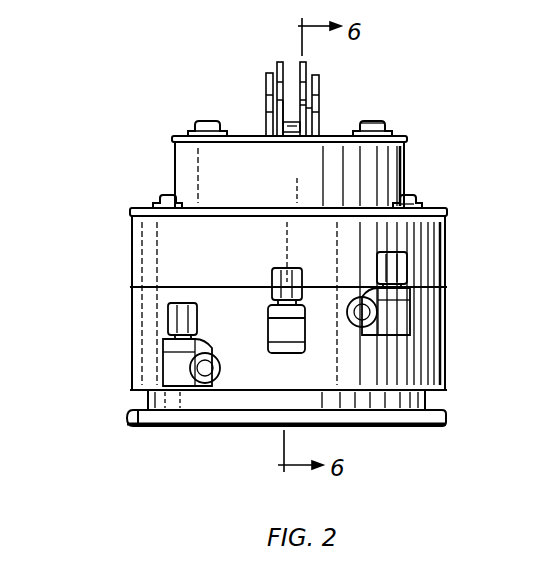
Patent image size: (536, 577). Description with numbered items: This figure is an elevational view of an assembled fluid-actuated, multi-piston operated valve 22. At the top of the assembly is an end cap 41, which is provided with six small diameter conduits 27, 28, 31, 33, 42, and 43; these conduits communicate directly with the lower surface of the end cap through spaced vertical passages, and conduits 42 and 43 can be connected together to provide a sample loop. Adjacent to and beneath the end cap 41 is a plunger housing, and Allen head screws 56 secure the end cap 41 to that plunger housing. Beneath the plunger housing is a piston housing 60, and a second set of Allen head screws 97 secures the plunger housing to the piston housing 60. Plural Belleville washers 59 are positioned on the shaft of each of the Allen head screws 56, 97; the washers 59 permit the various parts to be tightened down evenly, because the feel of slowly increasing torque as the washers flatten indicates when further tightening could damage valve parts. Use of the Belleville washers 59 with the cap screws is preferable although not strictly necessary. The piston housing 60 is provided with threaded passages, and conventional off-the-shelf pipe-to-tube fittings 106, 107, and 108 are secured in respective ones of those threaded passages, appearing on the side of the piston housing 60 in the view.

The valve 22 is at (103, 190).
The small diameter conduit 27 is at (306, 104).
The small diameter conduit 28 is at (277, 98).
The small diameter conduit 31 is at (278, 64).
The small diameter conduit 33 is at (306, 64).
The end cap 41 is at (407, 152).
The small diameter conduit 42 is at (266, 76).
The small diameter conduit 43 is at (319, 80).
The Allen head screw 56 is at (200, 121).
The Belleville washer 59 is at (392, 130).
The piston housing 60 is at (447, 310).
The Allen head screw 97 is at (160, 195).
The pipe-to-tube fitting 106 is at (405, 300).
The pipe-to-tube fitting 107 is at (285, 354).
The pipe-to-tube fitting 108 is at (205, 352).